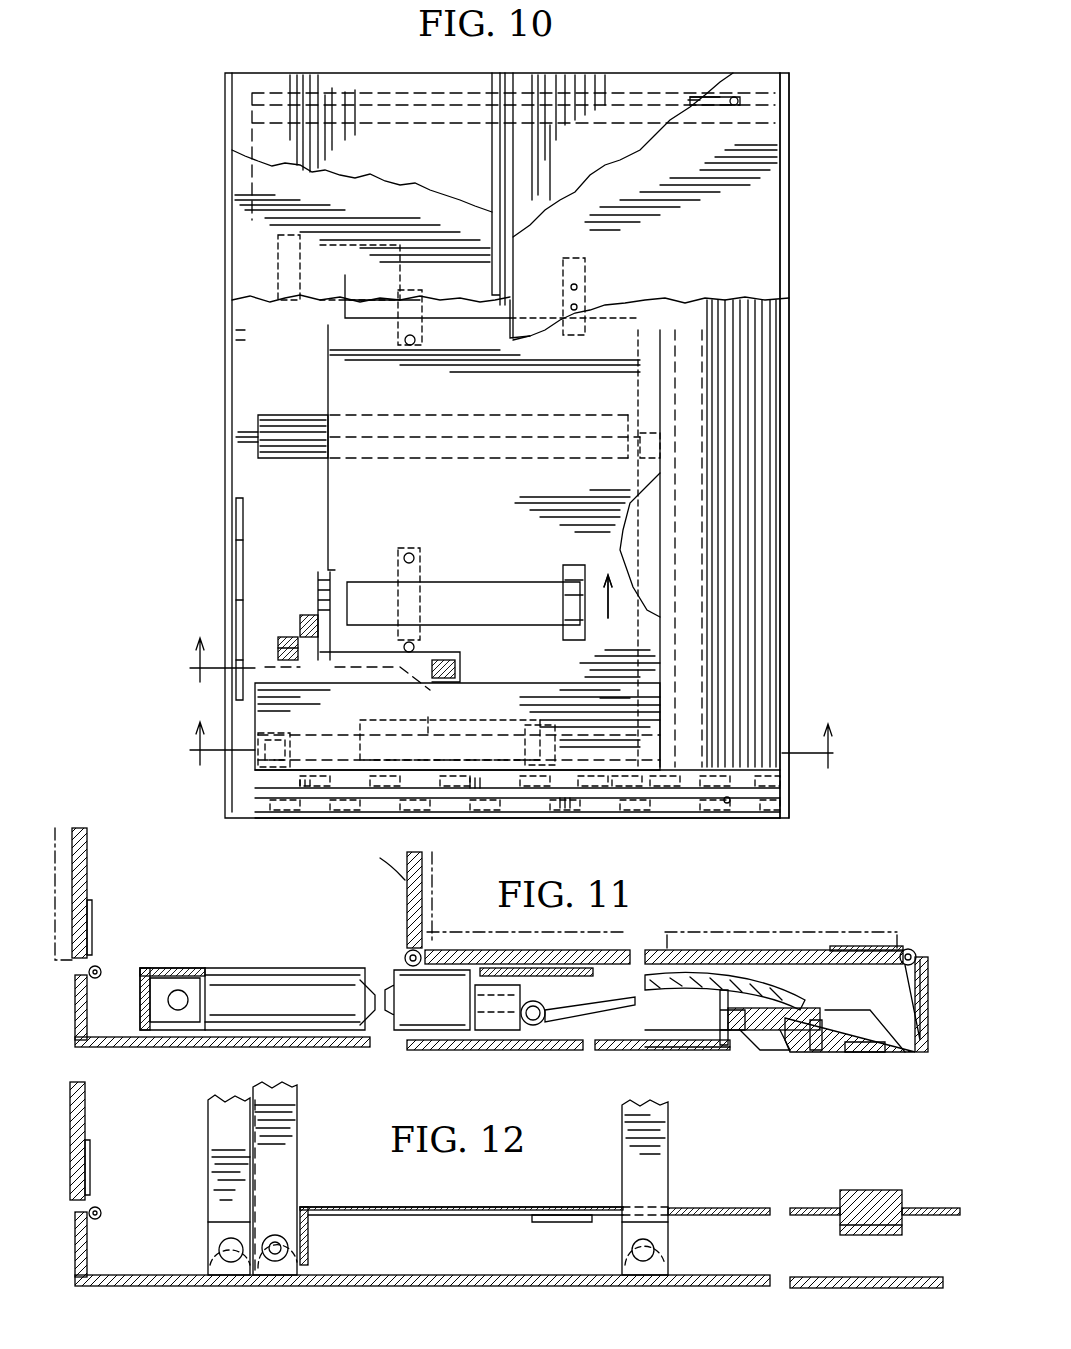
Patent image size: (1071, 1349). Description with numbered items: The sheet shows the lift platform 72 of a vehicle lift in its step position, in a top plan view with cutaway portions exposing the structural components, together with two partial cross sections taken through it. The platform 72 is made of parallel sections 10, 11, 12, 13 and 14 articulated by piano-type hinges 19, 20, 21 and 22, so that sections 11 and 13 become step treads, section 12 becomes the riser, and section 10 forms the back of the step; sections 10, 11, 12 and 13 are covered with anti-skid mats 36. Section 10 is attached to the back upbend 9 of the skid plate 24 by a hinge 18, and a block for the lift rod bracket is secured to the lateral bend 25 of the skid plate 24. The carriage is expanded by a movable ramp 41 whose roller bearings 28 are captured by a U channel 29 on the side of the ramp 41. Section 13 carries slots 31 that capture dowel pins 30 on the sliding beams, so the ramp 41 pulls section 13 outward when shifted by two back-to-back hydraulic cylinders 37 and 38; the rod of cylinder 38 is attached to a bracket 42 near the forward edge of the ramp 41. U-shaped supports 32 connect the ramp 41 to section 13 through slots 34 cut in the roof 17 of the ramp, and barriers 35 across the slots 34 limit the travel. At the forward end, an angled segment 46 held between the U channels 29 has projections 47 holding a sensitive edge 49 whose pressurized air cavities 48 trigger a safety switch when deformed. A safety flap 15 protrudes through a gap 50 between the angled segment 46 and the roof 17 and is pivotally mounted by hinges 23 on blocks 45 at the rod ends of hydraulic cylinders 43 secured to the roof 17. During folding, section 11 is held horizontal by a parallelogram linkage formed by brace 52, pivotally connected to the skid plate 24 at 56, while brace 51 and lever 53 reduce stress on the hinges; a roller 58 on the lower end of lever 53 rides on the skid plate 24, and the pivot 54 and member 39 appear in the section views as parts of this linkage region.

In FIG. 11, the back upbend 9 is at (75, 1013).
In FIG. 12, the back upbend 9 is at (75, 1246).
In FIG. 10, the platform section 10 is at (225, 285).
In FIG. 11, the platform section 10 is at (88, 852).
In FIG. 12, the platform section 10 is at (88, 1105).
In FIG. 10, the platform section 11 is at (292, 292).
In FIG. 10, the platform section 12 is at (505, 255).
In FIG. 11, the platform section 12 is at (386, 869).
In FIG. 10, the platform section 13 is at (618, 310).
In FIG. 11, the platform section 13 is at (810, 950).
In FIG. 10, the platform section 14 is at (792, 262).
In FIG. 11, the platform section 14 is at (931, 1005).
In FIG. 10, the safety flap 15 is at (735, 590).
In FIG. 11, the safety flap 15 is at (610, 1030).
In FIG. 10, the roof of the ramp 17 is at (620, 378).
In FIG. 11, the roof of the ramp 17 is at (171, 966).
In FIG. 12, the roof of the ramp 17 is at (702, 1210).
In FIG. 10, the hinge 18 is at (243, 538).
In FIG. 11, the hinge 18 is at (99, 966).
In FIG. 12, the hinge 18 is at (99, 1207).
In FIG. 10, the piano-type hinge 19 is at (228, 228).
In FIG. 10, the piano-type hinge 20 is at (492, 172).
In FIG. 11, the piano-type hinge 21 is at (406, 950).
In FIG. 10, the piano-type hinge 22 is at (766, 212).
In FIG. 11, the piano-type hinge 22 is at (800, 977).
In FIG. 11, the hinge 23 is at (531, 1027).
In FIG. 10, the skid plate 24 is at (255, 378).
In FIG. 11, the skid plate 24 is at (332, 1048).
In FIG. 12, the skid plate 24 is at (467, 1287).
In FIG. 10, the lateral bend 25 is at (630, 818).
In FIG. 10, the roller bearings 28 is at (575, 800).
In FIG. 10, the U channel 29 is at (332, 770).
In FIG. 10, the dowel pin 30 is at (727, 805).
In FIG. 10, the slot 31 is at (680, 115).
In FIG. 10, the U-shaped support 32 is at (564, 603).
In FIG. 12, the U-shaped support 32 is at (841, 1233).
In FIG. 10, the slot 34 is at (450, 312).
In FIG. 10, the barrier 35 is at (421, 605).
In FIG. 12, the barrier 35 is at (542, 1224).
In FIG. 10, the mat 36 is at (565, 95).
In FIG. 11, the mat 36 is at (58, 830).
In FIG. 10, the hydraulic cylinder 37 is at (288, 420).
In FIG. 10, the hydraulic cylinder 38 is at (288, 452).
In FIG. 10, the pin 39 is at (228, 400).
In FIG. 11, the movable ramp 41 is at (236, 952).
In FIG. 12, the movable ramp 41 is at (390, 1202).
In FIG. 10, the bracket 42 is at (659, 428).
In FIG. 10, the hydraulic cylinder 43 is at (428, 718).
In FIG. 11, the hydraulic cylinder 43 is at (280, 995).
In FIG. 10, the block 45 is at (540, 730).
In FIG. 11, the block 45 is at (492, 1032).
In FIG. 11, the angled segment 46 is at (700, 1030).
In FIG. 11, the projection 47 is at (775, 1035).
In FIG. 11, the pressurized air cavity 48 is at (818, 1052).
In FIG. 10, the sensitive edge 49 is at (777, 530).
In FIG. 11, the sensitive edge 49 is at (870, 1055).
In FIG. 11, the gap 50 is at (621, 968).
In FIG. 10, the brace 51 is at (278, 646).
In FIG. 12, the brace 51 is at (208, 1168).
In FIG. 10, the brace 52 is at (439, 668).
In FIG. 12, the brace 52 is at (669, 1144).
In FIG. 10, the lever 53 is at (305, 622).
In FIG. 12, the lever 53 is at (295, 1146).
In FIG. 12, the pivot 54 is at (215, 1236).
In FIG. 12, the pivot connection 56 is at (669, 1236).
In FIG. 10, the roller 58 is at (312, 615).
In FIG. 12, the roller 58 is at (294, 1275).
In FIG. 10, the lift platform 72 is at (549, 150).